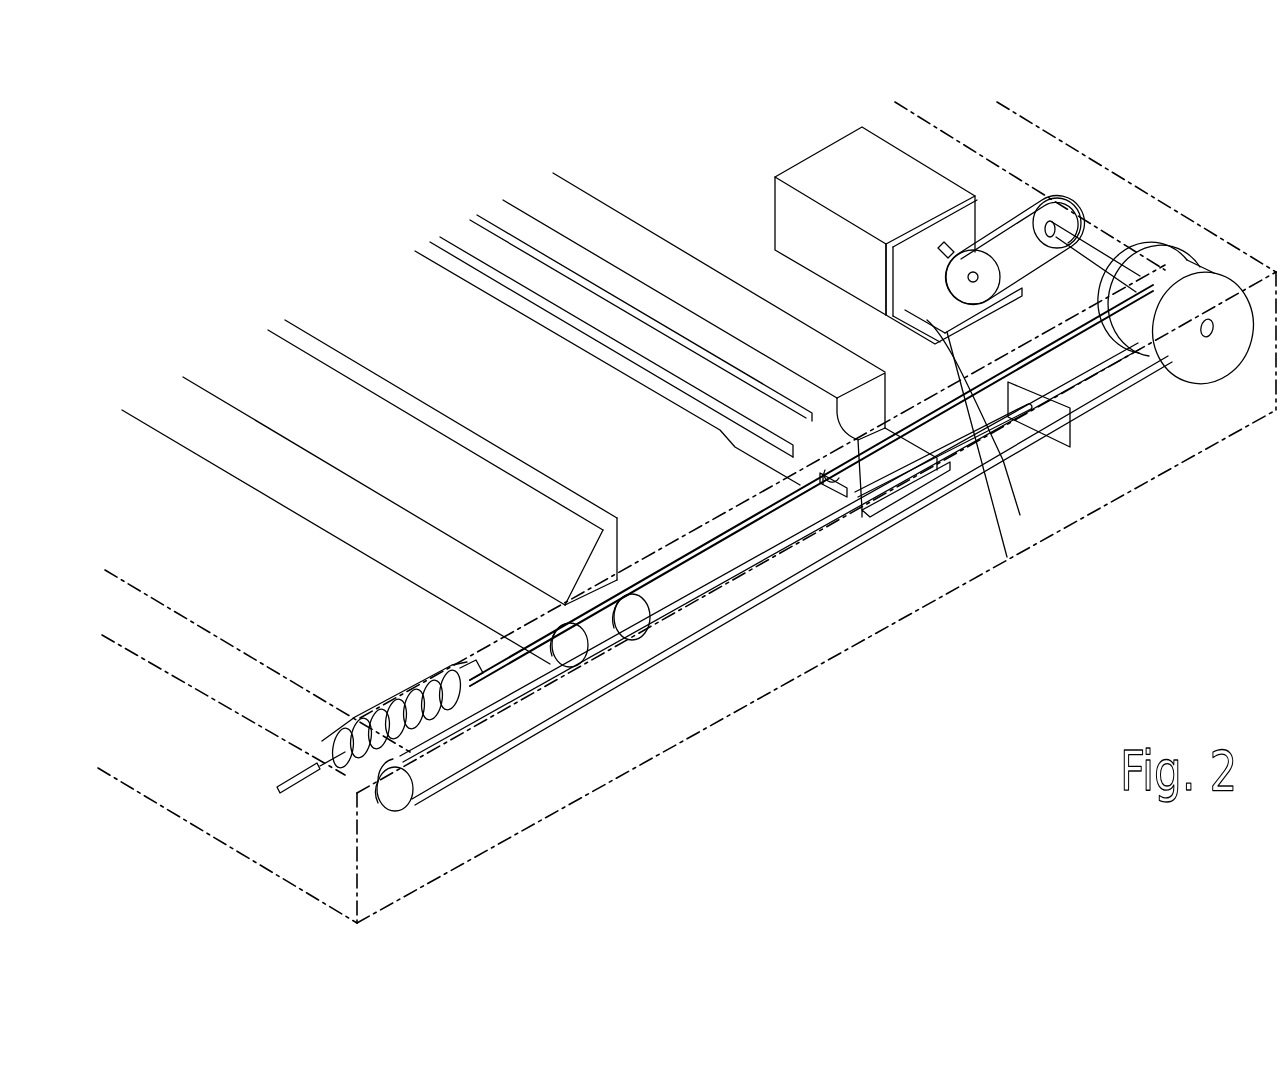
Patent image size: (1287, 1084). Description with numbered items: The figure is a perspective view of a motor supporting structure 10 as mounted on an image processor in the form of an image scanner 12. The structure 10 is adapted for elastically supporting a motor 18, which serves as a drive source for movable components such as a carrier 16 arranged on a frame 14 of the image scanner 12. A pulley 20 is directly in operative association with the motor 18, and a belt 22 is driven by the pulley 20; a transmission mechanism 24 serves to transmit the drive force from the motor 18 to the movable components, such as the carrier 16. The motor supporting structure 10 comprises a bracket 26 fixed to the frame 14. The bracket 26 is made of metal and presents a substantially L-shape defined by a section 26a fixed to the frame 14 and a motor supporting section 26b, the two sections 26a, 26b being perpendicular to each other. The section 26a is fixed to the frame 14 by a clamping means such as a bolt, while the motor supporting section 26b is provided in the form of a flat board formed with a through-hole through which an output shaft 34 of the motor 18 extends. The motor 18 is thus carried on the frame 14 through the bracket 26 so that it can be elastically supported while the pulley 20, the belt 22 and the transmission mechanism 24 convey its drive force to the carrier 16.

The motor supporting structure 10 is at (823, 255).
The image scanner 12 is at (1138, 496).
The frame 14 is at (731, 222).
The carrier 16 is at (563, 198).
The motor 18 is at (846, 167).
The pulley 20 is at (903, 295).
The belt 22 is at (1003, 220).
The transmission mechanism 24 is at (1155, 413).
The bracket 26 is at (1100, 593).
The section fixed to the frame 26a is at (1020, 515).
The motor supporting section 26b is at (1007, 557).
The output shaft 34 is at (978, 278).